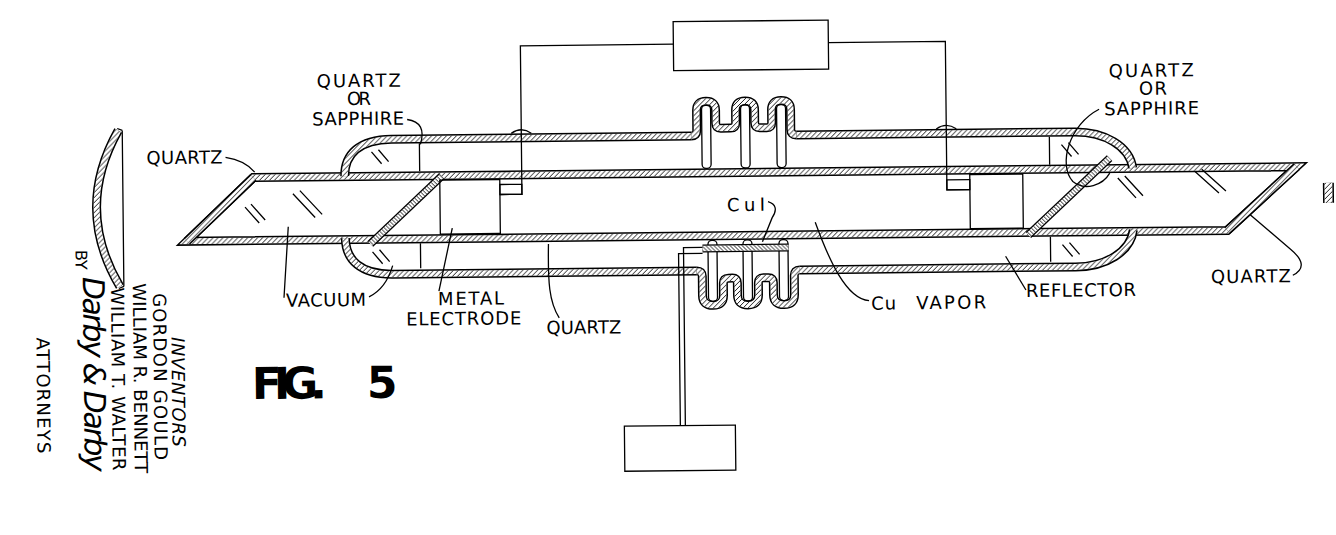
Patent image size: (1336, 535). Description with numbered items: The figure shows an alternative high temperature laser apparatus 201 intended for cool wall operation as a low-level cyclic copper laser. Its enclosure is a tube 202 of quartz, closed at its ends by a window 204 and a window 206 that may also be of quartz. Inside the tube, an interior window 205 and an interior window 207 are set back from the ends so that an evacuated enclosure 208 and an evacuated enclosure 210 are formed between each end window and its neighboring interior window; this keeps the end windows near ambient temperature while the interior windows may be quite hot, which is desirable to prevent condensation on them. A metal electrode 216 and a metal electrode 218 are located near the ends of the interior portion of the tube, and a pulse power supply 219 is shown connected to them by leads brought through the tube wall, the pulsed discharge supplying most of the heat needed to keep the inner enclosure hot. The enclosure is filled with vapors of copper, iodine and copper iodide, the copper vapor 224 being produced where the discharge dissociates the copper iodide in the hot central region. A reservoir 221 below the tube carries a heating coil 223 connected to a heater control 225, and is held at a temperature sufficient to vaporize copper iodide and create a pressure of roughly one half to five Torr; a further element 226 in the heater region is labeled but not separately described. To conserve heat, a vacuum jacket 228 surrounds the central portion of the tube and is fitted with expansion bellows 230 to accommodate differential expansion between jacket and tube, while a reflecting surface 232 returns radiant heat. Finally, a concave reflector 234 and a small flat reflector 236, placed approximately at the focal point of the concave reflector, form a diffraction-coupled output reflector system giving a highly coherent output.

The laser apparatus 201 is at (1018, 128).
The tube 202 is at (638, 274).
The window 204 is at (222, 200).
The interior window 205 is at (394, 216).
The window 206 is at (1248, 222).
The interior window 207 is at (1132, 165).
The evacuated enclosure 208 is at (268, 241).
The evacuated enclosure 210 is at (1150, 246).
The metal electrode 216 is at (483, 215).
The metal electrode 218 is at (1010, 216).
The pulse power supply 219 is at (826, 42).
The reservoir 221 is at (735, 303).
The heating coil 223 is at (794, 306).
The copper vapor 224 is at (639, 216).
The heater control 225 is at (734, 436).
The heater coil 226 is at (764, 303).
The jacket 228 is at (965, 131).
The expansion bellows 230 is at (792, 113).
The reflecting surface 232 is at (600, 142).
The concave reflector 234 is at (113, 251).
The small flat reflector 236 is at (1330, 189).